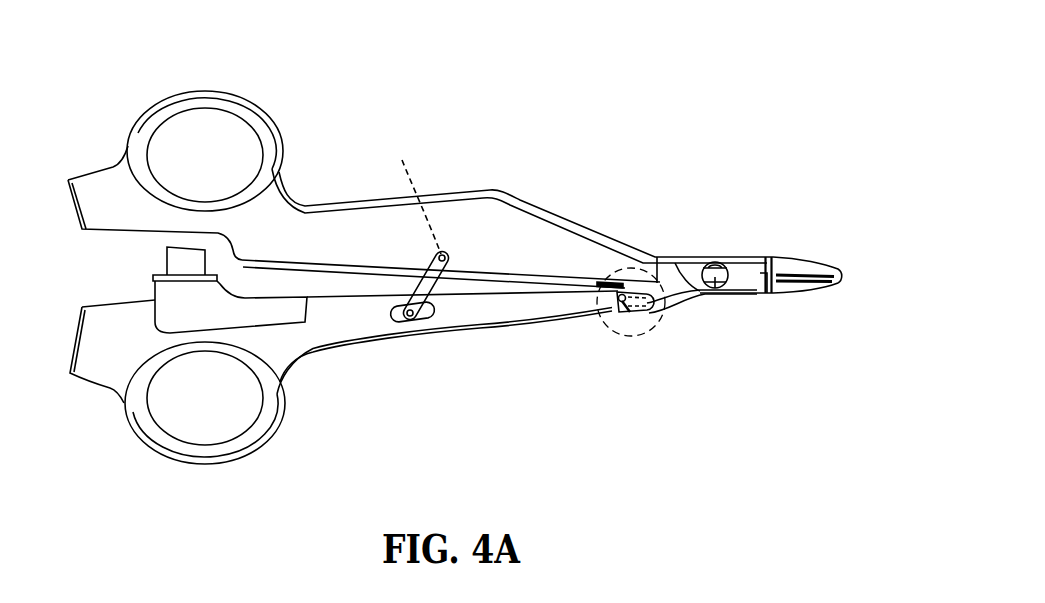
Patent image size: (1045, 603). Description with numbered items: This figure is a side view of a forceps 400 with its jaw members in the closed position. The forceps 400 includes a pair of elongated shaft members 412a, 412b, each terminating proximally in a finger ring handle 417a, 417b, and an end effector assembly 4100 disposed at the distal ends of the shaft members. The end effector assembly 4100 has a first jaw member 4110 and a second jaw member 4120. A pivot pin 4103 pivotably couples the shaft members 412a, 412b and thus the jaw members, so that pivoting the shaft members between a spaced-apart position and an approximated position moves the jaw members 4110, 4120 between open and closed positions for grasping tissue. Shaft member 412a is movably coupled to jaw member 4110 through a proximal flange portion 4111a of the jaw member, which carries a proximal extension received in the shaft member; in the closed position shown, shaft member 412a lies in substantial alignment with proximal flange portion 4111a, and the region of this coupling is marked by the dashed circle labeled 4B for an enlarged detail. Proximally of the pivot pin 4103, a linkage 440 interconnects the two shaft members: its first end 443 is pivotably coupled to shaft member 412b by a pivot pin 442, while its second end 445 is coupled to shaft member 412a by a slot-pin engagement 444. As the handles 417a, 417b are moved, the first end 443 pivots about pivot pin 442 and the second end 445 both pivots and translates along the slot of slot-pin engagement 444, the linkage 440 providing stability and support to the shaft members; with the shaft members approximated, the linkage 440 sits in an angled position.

The forceps 400 is at (597, 131).
The handle 417b is at (191, 91).
The handle 417a is at (188, 453).
The shaft member 412b is at (306, 222).
The shaft member 412a is at (305, 347).
The linkage 440 is at (443, 290).
The pivot pin 442 is at (444, 253).
The first end 443 is at (412, 192).
The slot-pin engagement 444 is at (426, 319).
The second end 445 is at (393, 306).
The end effector assembly 4100 is at (838, 217).
The proximal flange portion 4111a is at (692, 270).
The pivot pin 4103 is at (715, 289).
The jaw member 4110 is at (804, 262).
The jaw member 4120 is at (803, 291).
The detail view region 4B is at (641, 336).